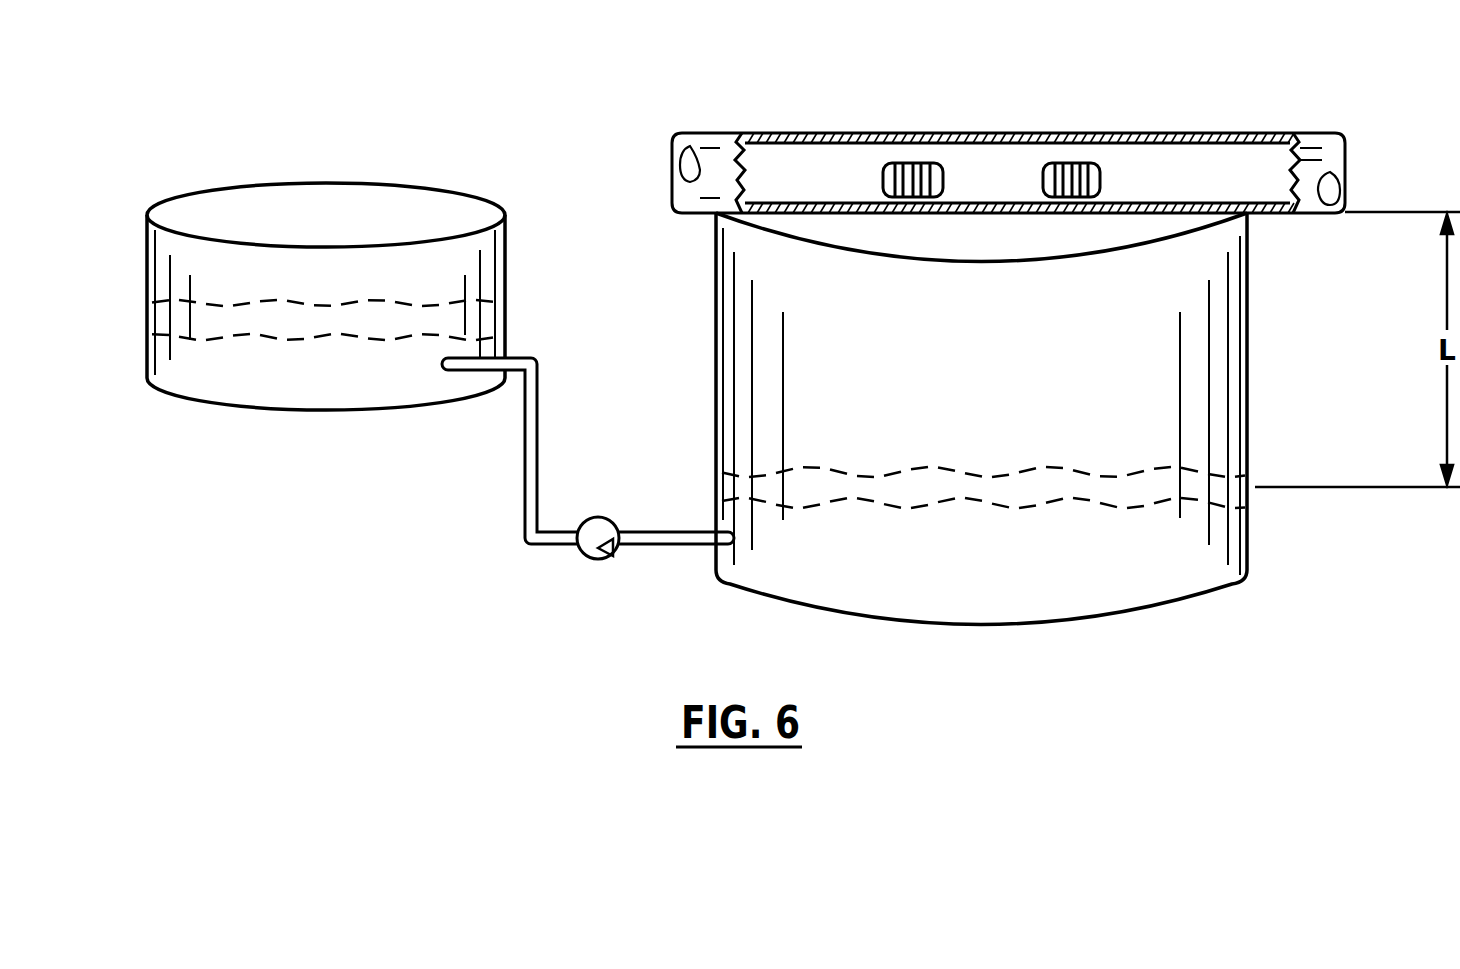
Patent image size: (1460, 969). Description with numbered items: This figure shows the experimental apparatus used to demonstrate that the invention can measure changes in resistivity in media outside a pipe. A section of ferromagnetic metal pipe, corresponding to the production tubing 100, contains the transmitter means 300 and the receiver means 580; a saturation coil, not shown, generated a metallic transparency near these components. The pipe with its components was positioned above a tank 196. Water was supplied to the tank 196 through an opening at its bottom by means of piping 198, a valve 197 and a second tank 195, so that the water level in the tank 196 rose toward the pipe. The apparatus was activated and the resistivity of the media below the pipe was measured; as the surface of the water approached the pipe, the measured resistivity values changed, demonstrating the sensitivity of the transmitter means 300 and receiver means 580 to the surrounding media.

The production tubing 100 is at (782, 132).
The transmitter means 300 is at (920, 163).
The receiver means 580 is at (1068, 163).
The second tank 195 is at (315, 410).
The tank 196 is at (714, 352).
The valve 197 is at (586, 554).
The piping 198 is at (522, 448).